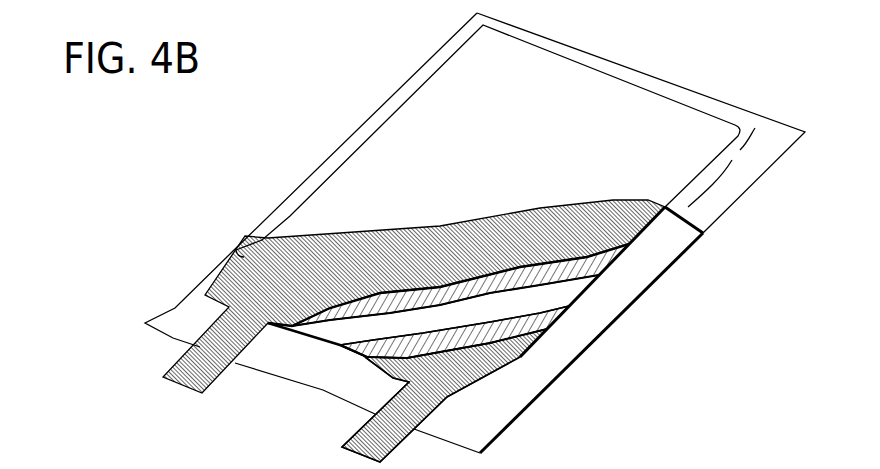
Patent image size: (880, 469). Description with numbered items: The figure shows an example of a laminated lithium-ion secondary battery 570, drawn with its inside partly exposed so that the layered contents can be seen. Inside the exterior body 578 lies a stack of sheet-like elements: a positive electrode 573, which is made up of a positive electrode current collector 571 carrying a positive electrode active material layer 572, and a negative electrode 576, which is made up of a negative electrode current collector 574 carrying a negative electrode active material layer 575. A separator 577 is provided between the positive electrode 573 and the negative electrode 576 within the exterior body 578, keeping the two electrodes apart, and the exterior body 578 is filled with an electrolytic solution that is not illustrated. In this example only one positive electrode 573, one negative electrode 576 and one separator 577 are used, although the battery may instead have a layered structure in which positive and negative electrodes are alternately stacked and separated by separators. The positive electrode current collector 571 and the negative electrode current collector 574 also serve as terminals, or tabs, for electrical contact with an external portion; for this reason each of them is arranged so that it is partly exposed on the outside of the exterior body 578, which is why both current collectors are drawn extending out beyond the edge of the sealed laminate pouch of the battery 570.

The laminated lithium-ion secondary battery 570 is at (230, 174).
The positive electrode current collector 571 is at (643, 237).
The positive electrode active material layer 572 is at (614, 273).
The positive electrode 573 is at (468, 296).
The negative electrode current collector 574 is at (517, 370).
The negative electrode active material layer 575 is at (553, 321).
The negative electrode 576 is at (515, 384).
The separator 577 is at (567, 296).
The exterior body 578 is at (400, 125).